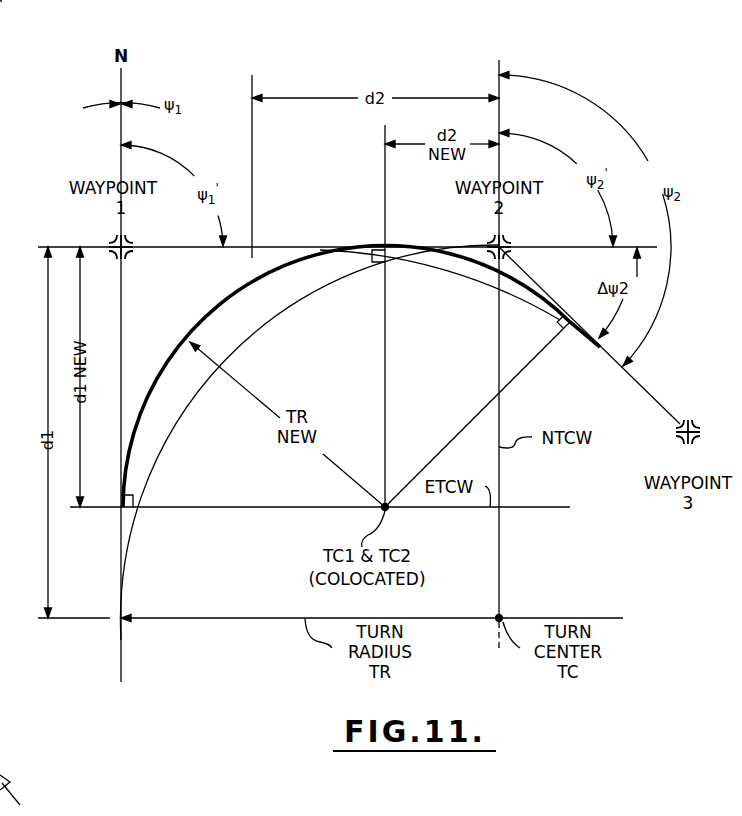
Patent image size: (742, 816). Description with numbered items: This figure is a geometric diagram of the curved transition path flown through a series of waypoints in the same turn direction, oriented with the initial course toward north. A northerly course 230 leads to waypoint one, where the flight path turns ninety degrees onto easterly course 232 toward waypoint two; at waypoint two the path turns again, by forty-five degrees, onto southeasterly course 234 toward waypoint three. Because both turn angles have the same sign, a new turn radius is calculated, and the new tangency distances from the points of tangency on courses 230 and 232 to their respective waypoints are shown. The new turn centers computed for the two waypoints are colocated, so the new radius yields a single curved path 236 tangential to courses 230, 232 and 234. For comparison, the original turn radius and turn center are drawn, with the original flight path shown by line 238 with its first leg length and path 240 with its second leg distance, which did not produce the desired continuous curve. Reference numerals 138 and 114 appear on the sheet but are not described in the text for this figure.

The course 230 is at (121, 332).
The course 232 is at (332, 246).
The course 234 is at (637, 375).
The curved path 236 is at (237, 290).
The line 238 is at (356, 273).
The path 240 is at (447, 273).
The aircraft symbol (adjacent figure) 138 is at (4, 768).
The display (adjacent figure) 114 is at (12, 5).